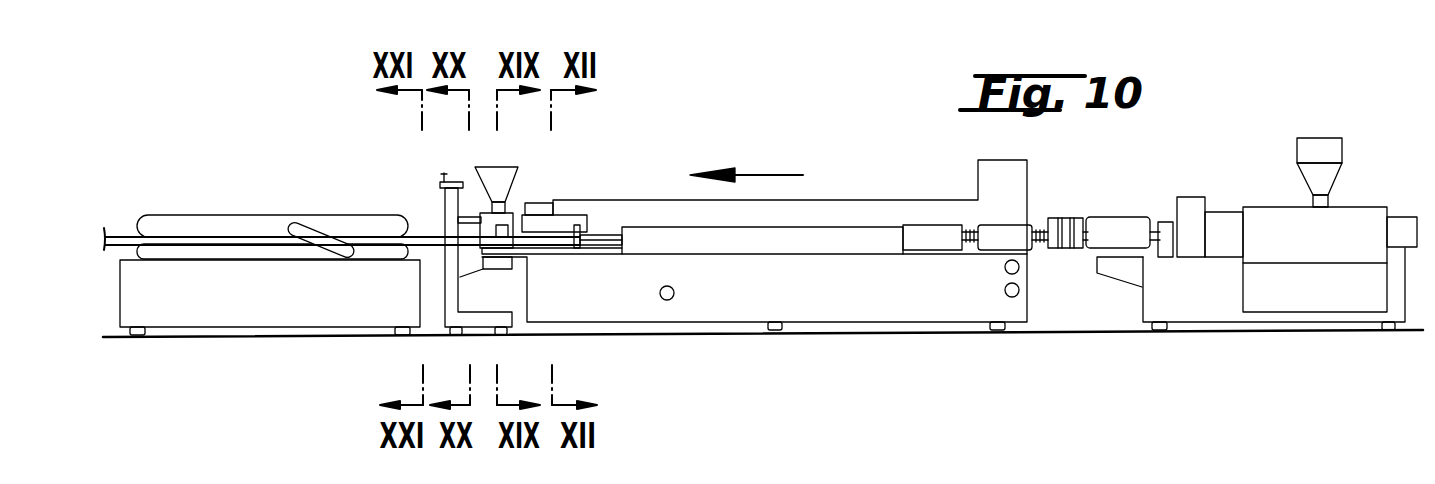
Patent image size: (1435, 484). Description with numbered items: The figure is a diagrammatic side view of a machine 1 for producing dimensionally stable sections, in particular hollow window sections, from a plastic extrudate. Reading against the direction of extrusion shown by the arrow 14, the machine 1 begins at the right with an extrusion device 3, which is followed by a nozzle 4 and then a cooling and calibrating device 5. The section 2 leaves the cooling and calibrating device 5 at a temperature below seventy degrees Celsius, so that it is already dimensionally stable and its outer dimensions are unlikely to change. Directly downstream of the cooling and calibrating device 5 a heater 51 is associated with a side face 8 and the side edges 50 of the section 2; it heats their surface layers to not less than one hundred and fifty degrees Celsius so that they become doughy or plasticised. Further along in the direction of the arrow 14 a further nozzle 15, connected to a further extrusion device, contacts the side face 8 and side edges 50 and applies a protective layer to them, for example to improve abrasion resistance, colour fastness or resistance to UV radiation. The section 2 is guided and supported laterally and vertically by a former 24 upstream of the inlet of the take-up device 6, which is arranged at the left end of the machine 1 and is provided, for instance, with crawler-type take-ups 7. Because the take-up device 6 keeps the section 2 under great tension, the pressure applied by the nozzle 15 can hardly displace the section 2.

The machine 1 is at (634, 141).
The section 2 is at (125, 236).
The extrusion device 3 is at (1385, 158).
The nozzle 4 is at (1079, 198).
The cooling and calibrating device 5 is at (845, 181).
The take-up device 6 is at (290, 201).
The crawler-type take-ups 7 is at (218, 232).
The side face 8 is at (604, 223).
The arrow 14 is at (770, 164).
The further nozzle 15 is at (505, 230).
The former 24 is at (579, 270).
The side edges 50 is at (602, 249).
The heater 51 is at (553, 216).